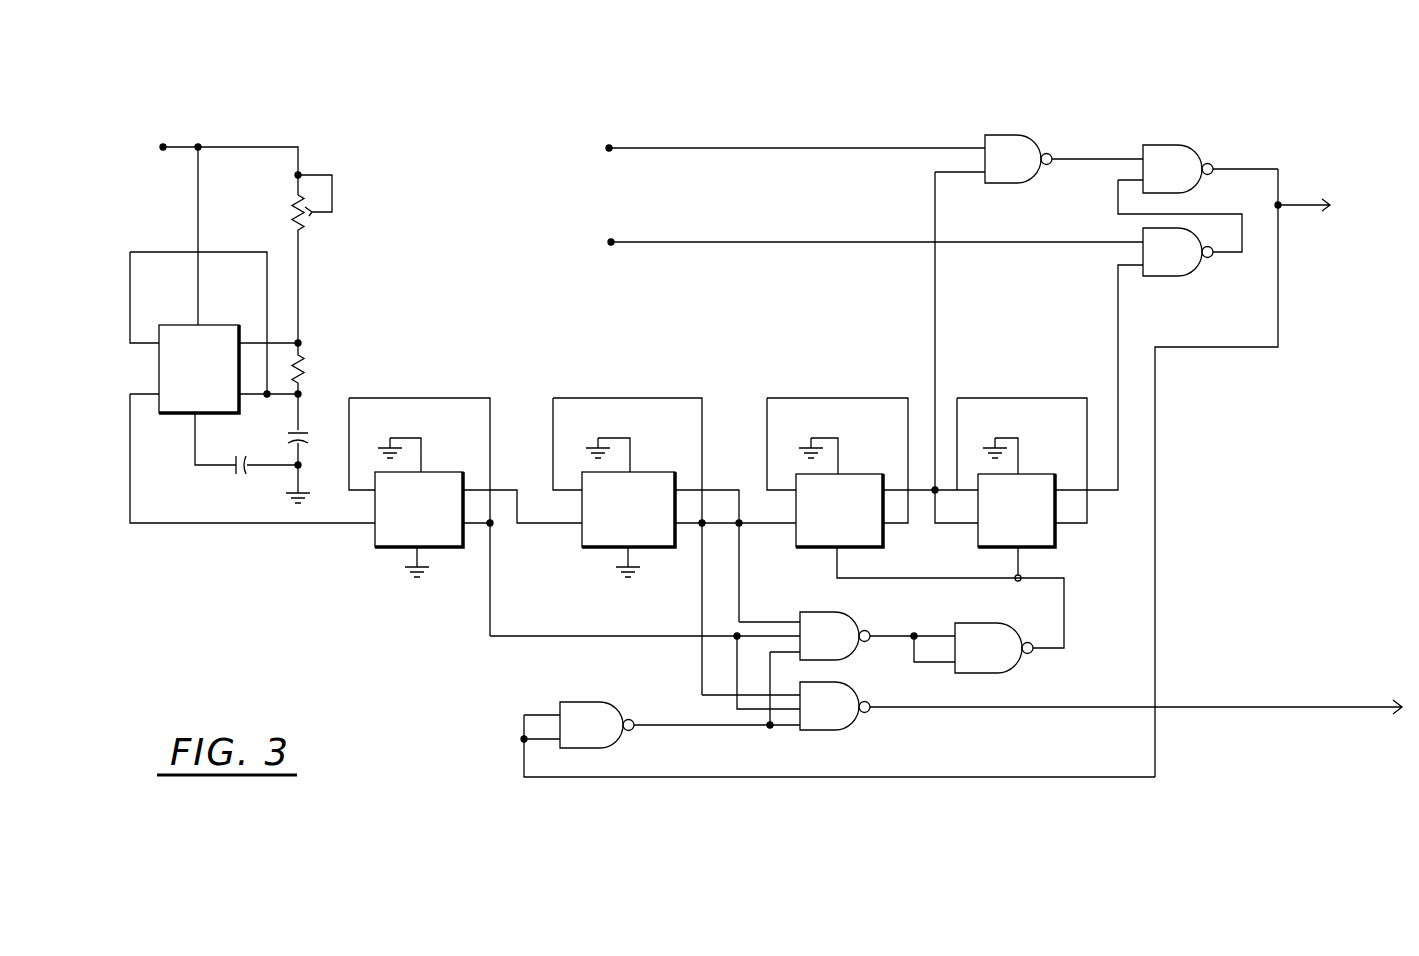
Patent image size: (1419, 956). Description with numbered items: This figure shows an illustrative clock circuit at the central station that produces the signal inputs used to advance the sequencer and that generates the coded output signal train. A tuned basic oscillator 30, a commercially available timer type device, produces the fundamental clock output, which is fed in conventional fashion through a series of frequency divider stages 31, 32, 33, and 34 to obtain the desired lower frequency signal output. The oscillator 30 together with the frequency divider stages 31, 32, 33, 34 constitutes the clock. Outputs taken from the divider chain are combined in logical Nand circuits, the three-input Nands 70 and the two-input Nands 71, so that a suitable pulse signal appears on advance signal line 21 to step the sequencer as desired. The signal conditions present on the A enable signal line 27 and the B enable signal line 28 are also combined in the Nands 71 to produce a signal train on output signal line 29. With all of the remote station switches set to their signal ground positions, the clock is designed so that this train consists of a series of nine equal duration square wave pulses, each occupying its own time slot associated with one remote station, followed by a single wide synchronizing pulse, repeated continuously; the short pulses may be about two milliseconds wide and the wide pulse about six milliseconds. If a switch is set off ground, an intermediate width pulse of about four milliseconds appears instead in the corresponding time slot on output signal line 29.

The advance input 21 is at (1190, 707).
The A enable signal line 27 is at (836, 147).
The B enable signal line 28 is at (838, 243).
The output signal line 29 is at (1300, 202).
The oscillator 30 is at (158, 366).
The frequency divider stage 31 is at (443, 470).
The frequency divider stage 32 is at (655, 470).
The frequency divider stage 33 is at (863, 472).
The frequency divider stage 34 is at (1040, 472).
The Nand 70 is at (847, 612).
The Nand 71 is at (1183, 144).